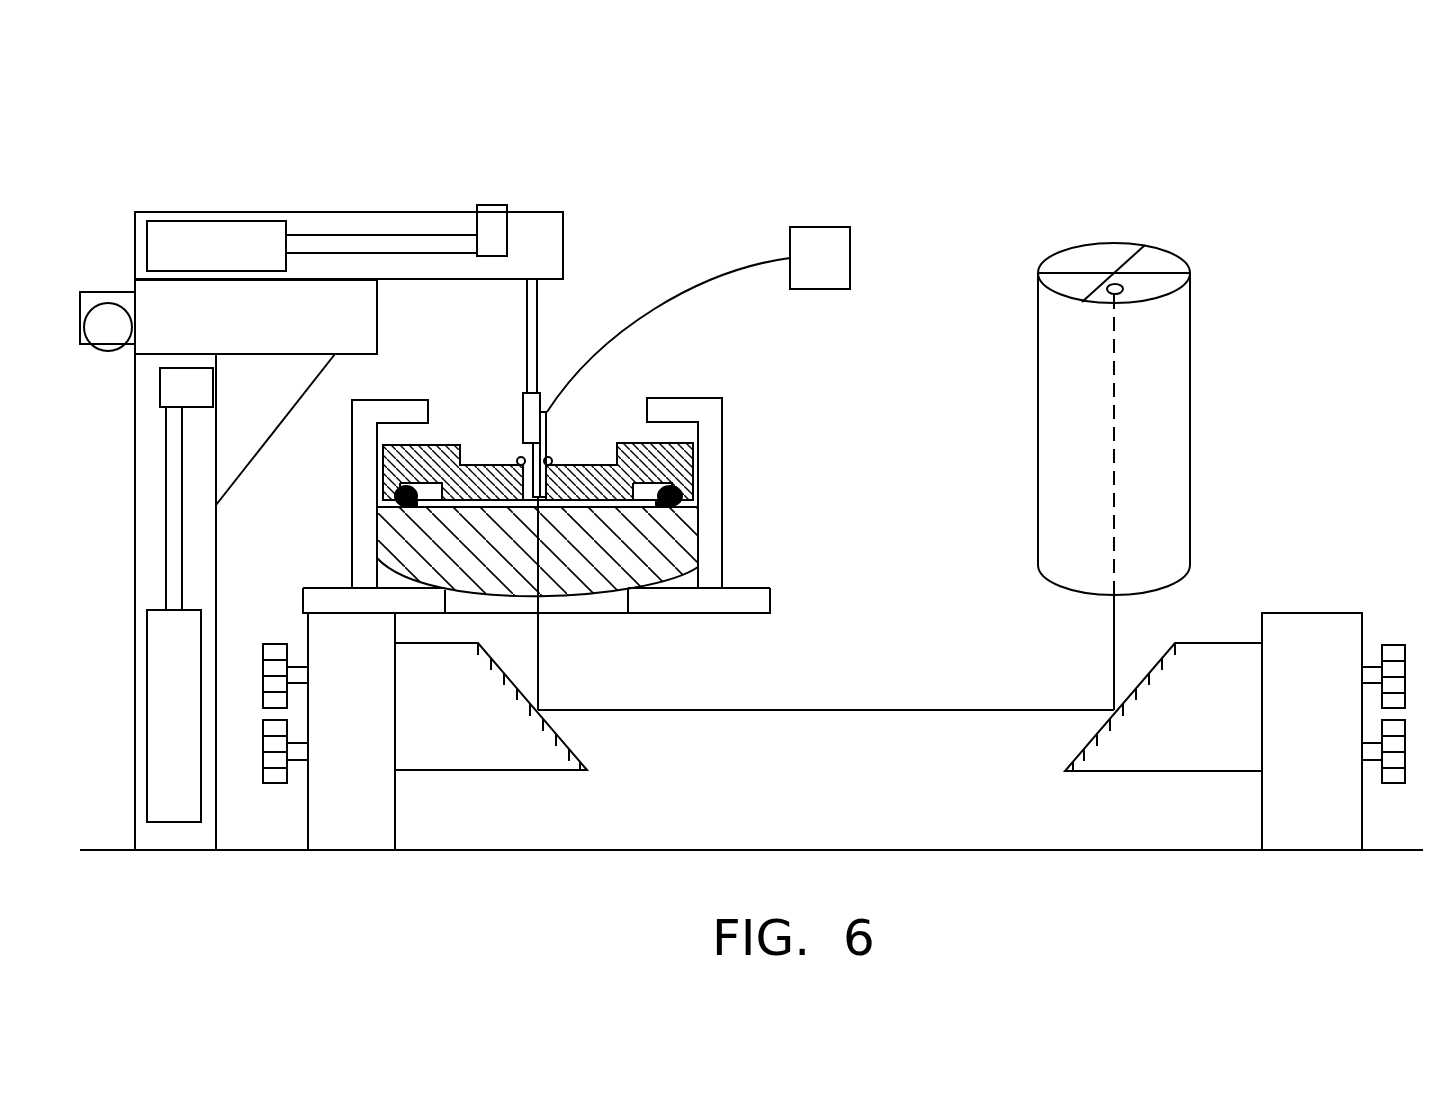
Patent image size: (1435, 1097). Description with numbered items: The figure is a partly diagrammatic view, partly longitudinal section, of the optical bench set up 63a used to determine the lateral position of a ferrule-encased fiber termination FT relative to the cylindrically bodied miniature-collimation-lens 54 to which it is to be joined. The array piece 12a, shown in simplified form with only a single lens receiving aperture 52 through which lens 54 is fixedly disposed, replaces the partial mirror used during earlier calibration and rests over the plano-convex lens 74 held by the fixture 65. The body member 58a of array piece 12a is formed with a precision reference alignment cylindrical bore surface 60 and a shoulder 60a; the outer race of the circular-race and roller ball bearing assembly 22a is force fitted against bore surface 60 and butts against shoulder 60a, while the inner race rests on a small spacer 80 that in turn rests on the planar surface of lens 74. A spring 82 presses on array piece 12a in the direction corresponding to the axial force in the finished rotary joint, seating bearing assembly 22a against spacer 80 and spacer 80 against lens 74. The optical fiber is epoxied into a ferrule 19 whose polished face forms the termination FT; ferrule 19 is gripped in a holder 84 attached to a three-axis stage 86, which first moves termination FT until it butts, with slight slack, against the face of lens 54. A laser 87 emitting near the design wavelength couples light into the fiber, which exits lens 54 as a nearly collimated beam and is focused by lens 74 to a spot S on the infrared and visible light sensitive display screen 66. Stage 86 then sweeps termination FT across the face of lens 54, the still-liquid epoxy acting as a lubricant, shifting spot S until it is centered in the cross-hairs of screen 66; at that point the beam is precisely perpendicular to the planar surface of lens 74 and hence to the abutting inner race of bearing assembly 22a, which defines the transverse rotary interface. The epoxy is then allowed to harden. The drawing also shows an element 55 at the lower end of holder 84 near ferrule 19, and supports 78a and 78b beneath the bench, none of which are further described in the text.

The three-axis stage 86 is at (345, 222).
The holder 84 is at (527, 311).
The needle holder 55 is at (523, 440).
The miniature-collimation-lens 54 is at (523, 471).
The laser 87 is at (822, 227).
The fixture 65 is at (700, 398).
The spring 82 is at (437, 445).
The body member 58a is at (643, 443).
The spacer 80 is at (700, 525).
The shoulder 60a is at (395, 495).
The cylindrical bore surface 60 is at (685, 497).
The plano-convex lens 74 is at (650, 573).
The circular race and roller ball thrust bearing assembly 22a is at (370, 514).
The lens receiving aperture 52 is at (540, 500).
The encased-fiber-termination FT is at (565, 490).
The ferrule 19 is at (557, 447).
The array piece 12a is at (588, 448).
The left wedge support 78a is at (512, 771).
The right wedge support 78b is at (1143, 771).
The display screen 66 is at (1170, 432).
The spot S is at (1125, 286).
The optical bench set up 63a is at (950, 137).